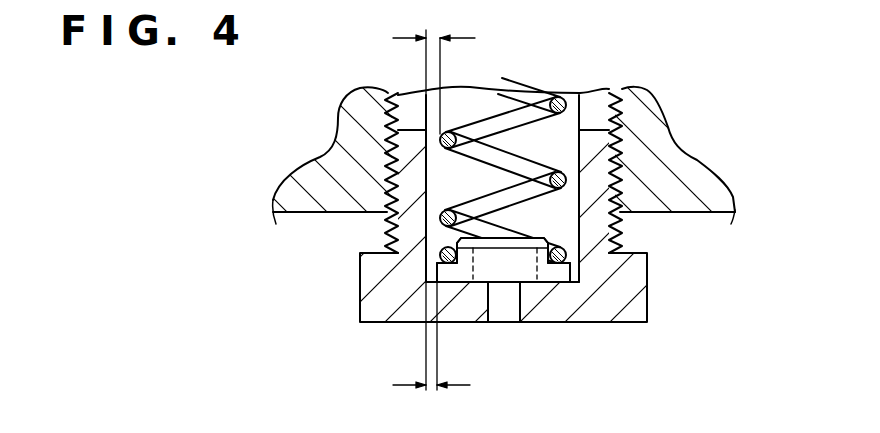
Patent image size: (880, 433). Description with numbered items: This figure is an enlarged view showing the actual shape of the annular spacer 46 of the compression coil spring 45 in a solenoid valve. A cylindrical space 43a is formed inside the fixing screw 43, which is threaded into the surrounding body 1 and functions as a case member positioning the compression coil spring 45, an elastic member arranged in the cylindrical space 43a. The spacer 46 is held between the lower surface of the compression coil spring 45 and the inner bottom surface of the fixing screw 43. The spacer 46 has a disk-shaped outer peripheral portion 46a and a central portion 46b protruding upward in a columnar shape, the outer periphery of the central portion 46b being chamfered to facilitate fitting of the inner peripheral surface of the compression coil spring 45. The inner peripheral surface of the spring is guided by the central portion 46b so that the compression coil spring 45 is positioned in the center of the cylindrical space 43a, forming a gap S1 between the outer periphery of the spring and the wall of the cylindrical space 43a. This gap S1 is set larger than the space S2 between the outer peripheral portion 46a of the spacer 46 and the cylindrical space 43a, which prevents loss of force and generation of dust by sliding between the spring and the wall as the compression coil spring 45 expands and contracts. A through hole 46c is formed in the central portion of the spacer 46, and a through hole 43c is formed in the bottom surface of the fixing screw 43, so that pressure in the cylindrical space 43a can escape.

The housing 1 is at (637, 113).
The fixing screw 43 is at (633, 290).
The cylindrical space 43a is at (583, 235).
The through hole 43c is at (503, 308).
The compression coil spring 45 is at (533, 172).
The annular spacer 46 is at (434, 271).
The outer peripheral portion 46a is at (556, 272).
The central portion 46b is at (502, 258).
The through hole 46c is at (457, 229).
The gap S1 is at (434, 68).
The space S2 is at (431, 353).